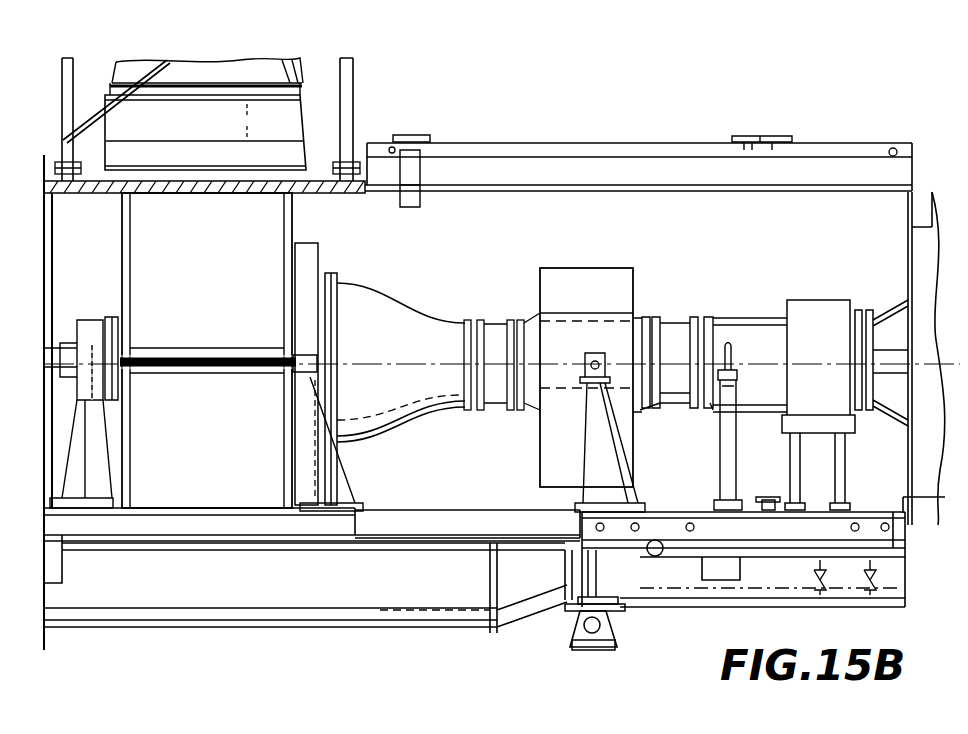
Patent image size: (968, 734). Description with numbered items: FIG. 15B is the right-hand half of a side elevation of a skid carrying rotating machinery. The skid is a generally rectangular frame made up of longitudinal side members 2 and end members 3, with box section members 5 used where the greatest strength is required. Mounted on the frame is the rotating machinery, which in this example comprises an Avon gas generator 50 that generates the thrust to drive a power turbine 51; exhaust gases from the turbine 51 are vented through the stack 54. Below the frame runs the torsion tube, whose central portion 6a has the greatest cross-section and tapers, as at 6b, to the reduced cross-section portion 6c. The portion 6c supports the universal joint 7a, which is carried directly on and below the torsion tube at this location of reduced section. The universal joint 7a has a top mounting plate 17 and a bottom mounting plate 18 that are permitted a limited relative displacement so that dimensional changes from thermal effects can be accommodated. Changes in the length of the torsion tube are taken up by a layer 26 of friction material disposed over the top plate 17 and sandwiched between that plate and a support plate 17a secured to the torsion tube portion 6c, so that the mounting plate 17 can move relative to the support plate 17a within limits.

The longitudinal side member 2 is at (212, 521).
The end member 3 is at (905, 530).
The box section member 5 is at (468, 527).
The central portion of torsion tube 6a is at (293, 603).
The tapered portion of torsion tube 6b is at (517, 578).
The reduced cross-section portion of torsion tube 6c is at (772, 578).
The universal joint 7a is at (597, 616).
The top mounting plate 17 is at (613, 613).
The support plate 17a is at (600, 600).
The bottom mounting plate 18 is at (605, 648).
The layer of friction material 26 is at (620, 608).
The gas generator 50 is at (608, 343).
The power turbine 51 is at (224, 288).
The stack 54 is at (224, 138).